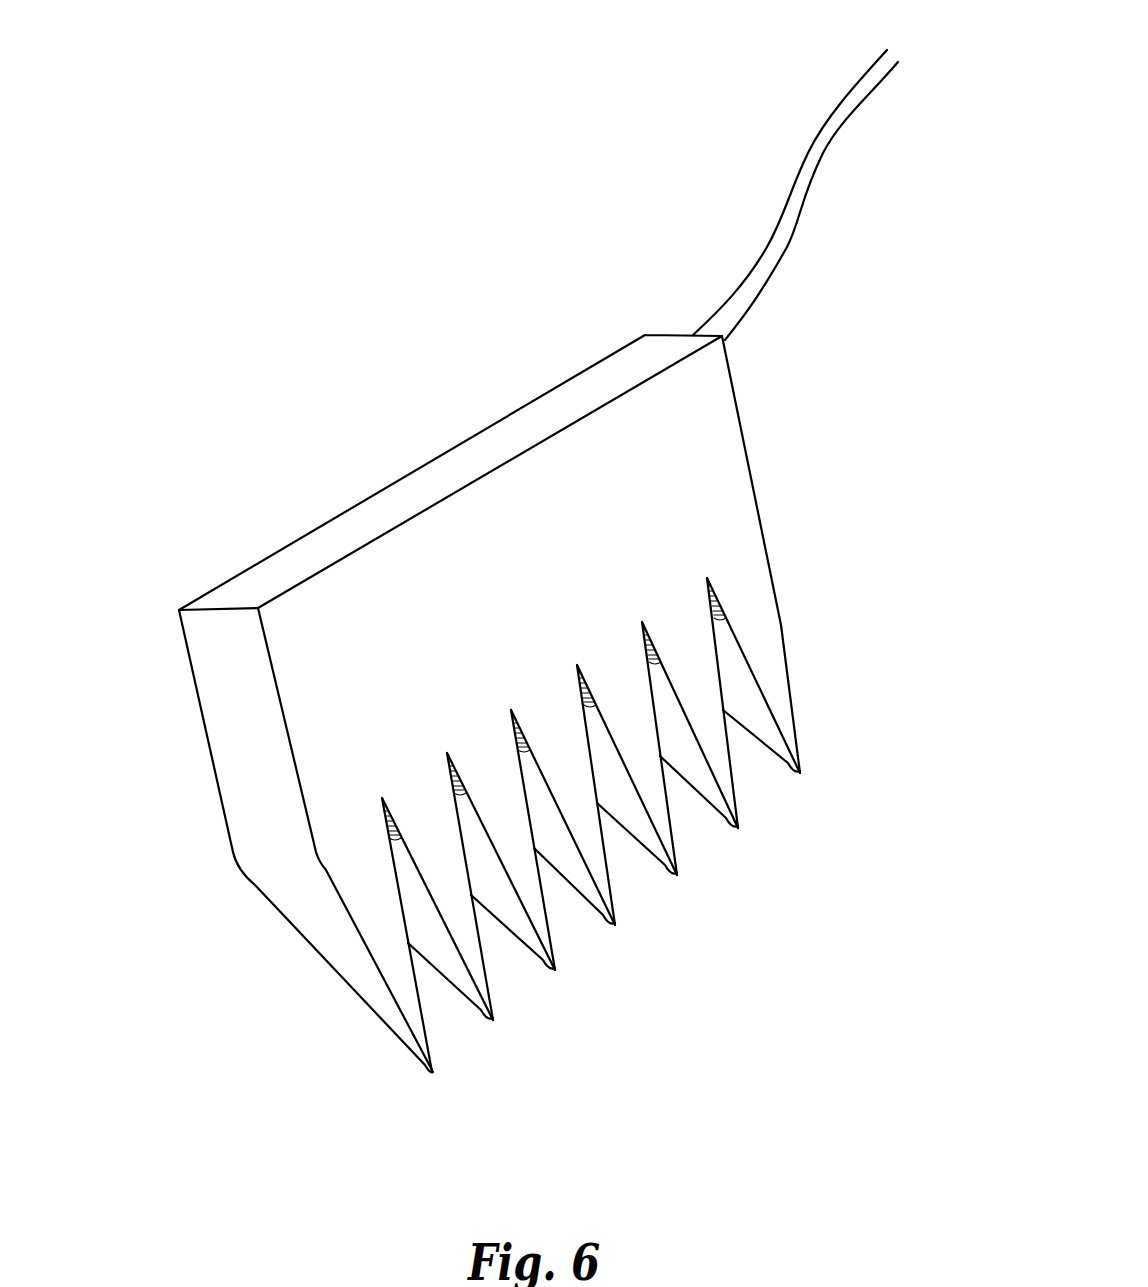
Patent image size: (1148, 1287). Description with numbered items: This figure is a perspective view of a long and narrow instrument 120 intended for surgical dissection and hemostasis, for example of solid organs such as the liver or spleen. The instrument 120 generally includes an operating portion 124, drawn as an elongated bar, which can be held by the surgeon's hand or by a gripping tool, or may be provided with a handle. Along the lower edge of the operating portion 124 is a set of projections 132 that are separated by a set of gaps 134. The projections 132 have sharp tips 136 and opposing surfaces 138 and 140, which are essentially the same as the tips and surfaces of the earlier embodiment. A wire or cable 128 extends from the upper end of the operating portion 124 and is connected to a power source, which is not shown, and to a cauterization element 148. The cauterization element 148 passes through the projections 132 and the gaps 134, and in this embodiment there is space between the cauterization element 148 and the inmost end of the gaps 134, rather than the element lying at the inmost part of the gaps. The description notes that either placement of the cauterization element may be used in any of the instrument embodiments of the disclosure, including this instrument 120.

The instrument 120 is at (499, 618).
The operating portion 124 is at (481, 691).
The wire or cable 128 is at (808, 150).
The projections 132 is at (590, 832).
The gaps 134 is at (760, 783).
The sharp tips 136 is at (738, 828).
The opposing surface 138 is at (767, 667).
The opposing surface 140 is at (320, 955).
The cauterization element 148 is at (720, 598).